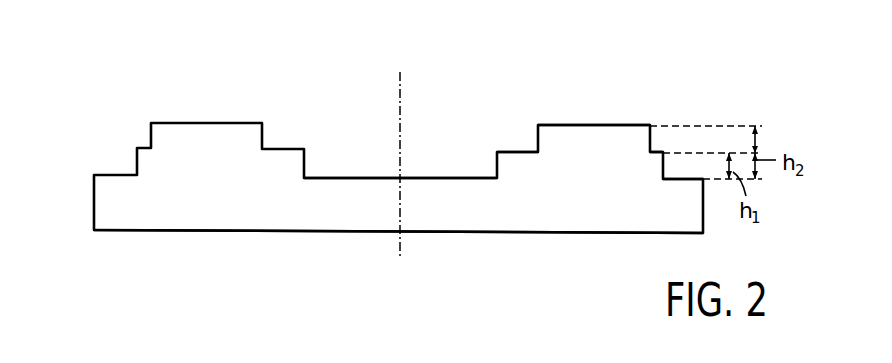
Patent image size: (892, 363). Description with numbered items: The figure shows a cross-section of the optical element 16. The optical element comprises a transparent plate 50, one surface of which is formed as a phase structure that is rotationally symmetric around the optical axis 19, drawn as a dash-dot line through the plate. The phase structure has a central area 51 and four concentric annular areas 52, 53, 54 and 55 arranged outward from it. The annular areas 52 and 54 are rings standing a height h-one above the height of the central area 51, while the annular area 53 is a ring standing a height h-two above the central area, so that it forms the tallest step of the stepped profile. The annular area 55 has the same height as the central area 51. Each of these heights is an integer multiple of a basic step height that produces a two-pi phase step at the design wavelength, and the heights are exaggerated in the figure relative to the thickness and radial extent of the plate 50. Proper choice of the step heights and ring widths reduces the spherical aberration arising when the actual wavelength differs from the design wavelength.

The optical element 16 is at (122, 78).
The optical axis 19 is at (400, 74).
The transparent plate 50 is at (122, 219).
The central area 51 is at (450, 177).
The annular area 52 is at (515, 150).
The annular area 53 is at (579, 124).
The annular area 54 is at (655, 150).
The annular area 55 is at (693, 178).